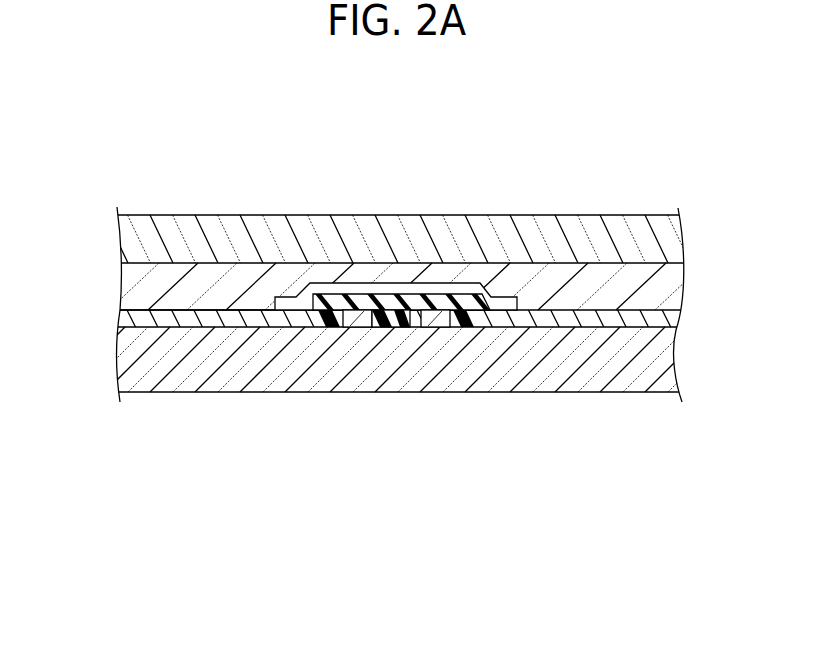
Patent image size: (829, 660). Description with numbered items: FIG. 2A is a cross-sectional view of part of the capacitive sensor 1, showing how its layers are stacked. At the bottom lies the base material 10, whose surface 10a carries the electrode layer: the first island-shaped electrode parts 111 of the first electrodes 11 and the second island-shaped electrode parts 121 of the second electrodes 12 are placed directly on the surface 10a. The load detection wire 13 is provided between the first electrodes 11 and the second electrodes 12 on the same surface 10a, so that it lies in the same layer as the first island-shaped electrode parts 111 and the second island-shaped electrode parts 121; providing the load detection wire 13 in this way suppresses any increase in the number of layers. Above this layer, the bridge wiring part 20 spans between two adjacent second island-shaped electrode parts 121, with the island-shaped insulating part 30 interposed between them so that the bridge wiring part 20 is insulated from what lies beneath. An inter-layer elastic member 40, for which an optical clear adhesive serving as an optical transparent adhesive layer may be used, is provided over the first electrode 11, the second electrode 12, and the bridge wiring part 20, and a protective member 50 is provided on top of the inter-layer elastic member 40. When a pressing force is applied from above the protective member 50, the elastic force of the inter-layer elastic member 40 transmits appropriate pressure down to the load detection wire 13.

The display device 1 is at (405, 259).
The base material 10 is at (665, 368).
The surface of the base material 10a is at (118, 312).
The first electrode 11 is at (396, 380).
The first island-shaped electrode part 111 is at (397, 317).
The second electrode 12 is at (387, 233).
The second island-shaped electrode part 121 is at (222, 322).
The load detection wire 13 is at (356, 318).
The bridge wiring part 20 is at (400, 290).
The island-shaped insulating part 30 is at (460, 302).
The inter-layer elastic member 40 is at (667, 283).
The protective member 50 is at (666, 233).